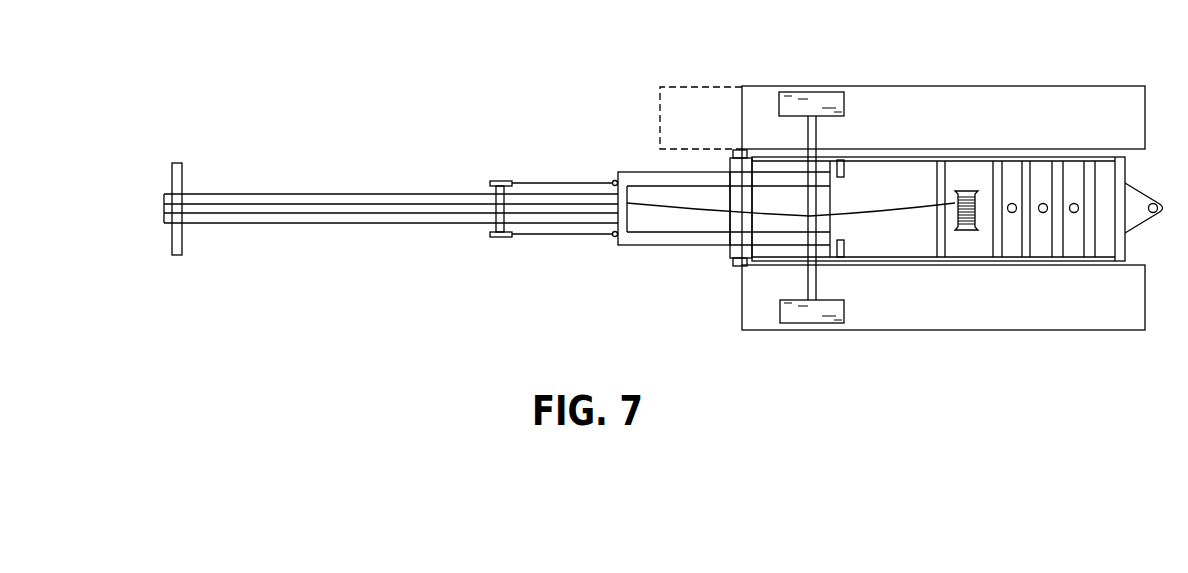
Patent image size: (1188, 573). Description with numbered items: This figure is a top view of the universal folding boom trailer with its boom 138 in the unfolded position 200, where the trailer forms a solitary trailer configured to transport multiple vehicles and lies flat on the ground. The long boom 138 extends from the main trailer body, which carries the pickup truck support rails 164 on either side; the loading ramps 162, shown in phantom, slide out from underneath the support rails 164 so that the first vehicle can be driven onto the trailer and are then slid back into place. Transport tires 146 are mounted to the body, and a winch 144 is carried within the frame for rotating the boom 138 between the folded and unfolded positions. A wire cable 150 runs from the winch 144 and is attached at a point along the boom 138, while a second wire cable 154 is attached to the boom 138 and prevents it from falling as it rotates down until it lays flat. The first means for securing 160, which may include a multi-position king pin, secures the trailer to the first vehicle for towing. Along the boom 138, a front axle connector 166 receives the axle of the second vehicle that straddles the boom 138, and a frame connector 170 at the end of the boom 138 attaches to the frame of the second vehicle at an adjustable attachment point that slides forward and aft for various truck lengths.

The unfolded position 200 is at (550, 112).
The frame connector 170 is at (173, 163).
The boom 138 is at (268, 194).
The front axle connector 166 is at (492, 181).
The wire cable 154 is at (650, 203).
The wire cable 150 is at (893, 210).
The loading ramps 162 is at (685, 87).
The transport tires 146 is at (810, 92).
The pickup truck support rails 164 is at (1085, 86).
The winch 144 is at (967, 232).
The first means for securing 160 is at (1074, 213).